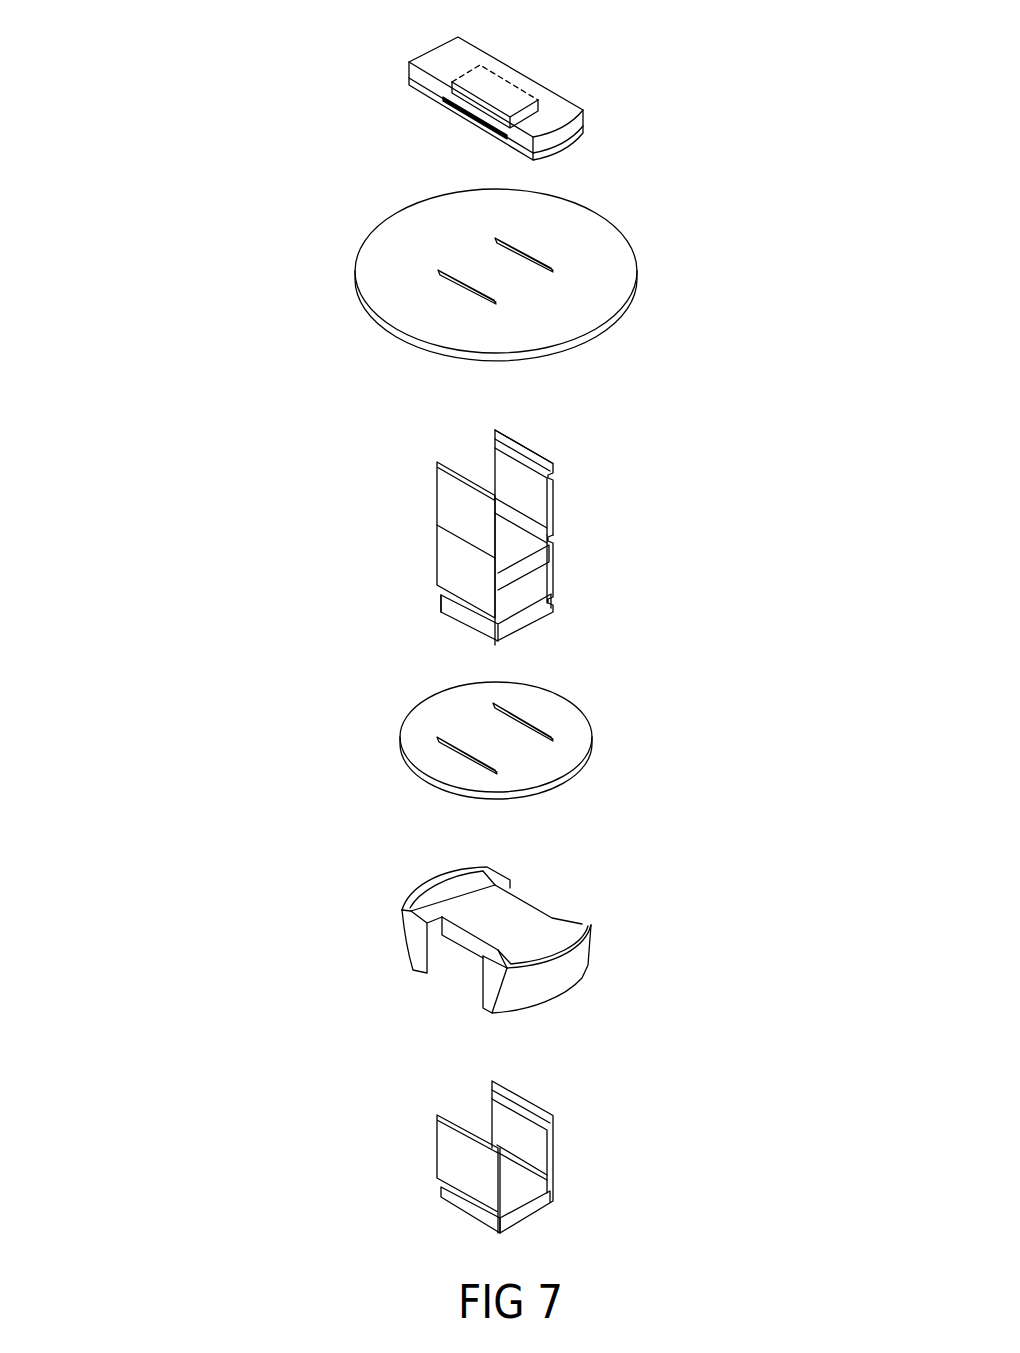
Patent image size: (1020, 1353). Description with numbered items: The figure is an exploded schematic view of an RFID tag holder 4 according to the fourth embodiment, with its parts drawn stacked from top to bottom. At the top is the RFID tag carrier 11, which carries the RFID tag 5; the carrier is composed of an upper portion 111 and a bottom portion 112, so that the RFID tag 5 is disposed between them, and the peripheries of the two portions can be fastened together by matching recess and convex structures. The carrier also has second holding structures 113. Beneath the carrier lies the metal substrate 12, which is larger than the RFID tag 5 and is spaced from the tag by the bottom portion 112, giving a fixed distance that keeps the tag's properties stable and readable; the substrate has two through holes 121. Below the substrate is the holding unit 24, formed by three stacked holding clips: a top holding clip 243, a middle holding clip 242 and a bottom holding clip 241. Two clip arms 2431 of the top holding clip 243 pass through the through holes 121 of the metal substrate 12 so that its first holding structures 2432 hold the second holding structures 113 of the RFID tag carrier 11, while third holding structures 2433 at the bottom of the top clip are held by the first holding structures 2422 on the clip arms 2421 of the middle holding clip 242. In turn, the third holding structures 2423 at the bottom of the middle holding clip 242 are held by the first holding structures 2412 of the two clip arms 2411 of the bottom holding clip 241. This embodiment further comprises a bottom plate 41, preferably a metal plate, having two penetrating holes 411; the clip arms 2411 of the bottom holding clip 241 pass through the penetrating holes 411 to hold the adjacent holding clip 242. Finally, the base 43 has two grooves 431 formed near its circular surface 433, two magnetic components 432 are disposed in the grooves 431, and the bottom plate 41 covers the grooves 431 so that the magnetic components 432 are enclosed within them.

The RFID tag holder 4 is at (203, 58).
The RFID tag carrier 11 is at (292, 50).
The upper portion 111 is at (417, 77).
The bottom portion 112 is at (403, 87).
The second holding structures 113 is at (445, 108).
The RFID tag 5 is at (503, 88).
The metal substrate 12 is at (588, 333).
The through holes 121 is at (530, 252).
The bobbin 24 is at (577, 456).
The bottom holding clip 241 is at (557, 1140).
The clip arms 2411 is at (457, 1165).
The first holding structures 2412 is at (493, 1098).
The middle holding clip 242 is at (553, 560).
The clip arms 2421 is at (440, 542).
The first holding structures 2422 is at (502, 570).
The third holding structures 2423 is at (483, 620).
The top holding clip 243 is at (553, 502).
The clip arms 2431 is at (440, 502).
The first holding structures 2432 is at (490, 445).
The third holding structures 2433 is at (481, 621).
The bottom plate 41 is at (553, 784).
The penetrating holes 411 is at (522, 722).
The base 43 is at (535, 899).
The grooves 431 is at (450, 870).
The magnetic components 432 is at (430, 897).
The circular surface 433 is at (418, 948).